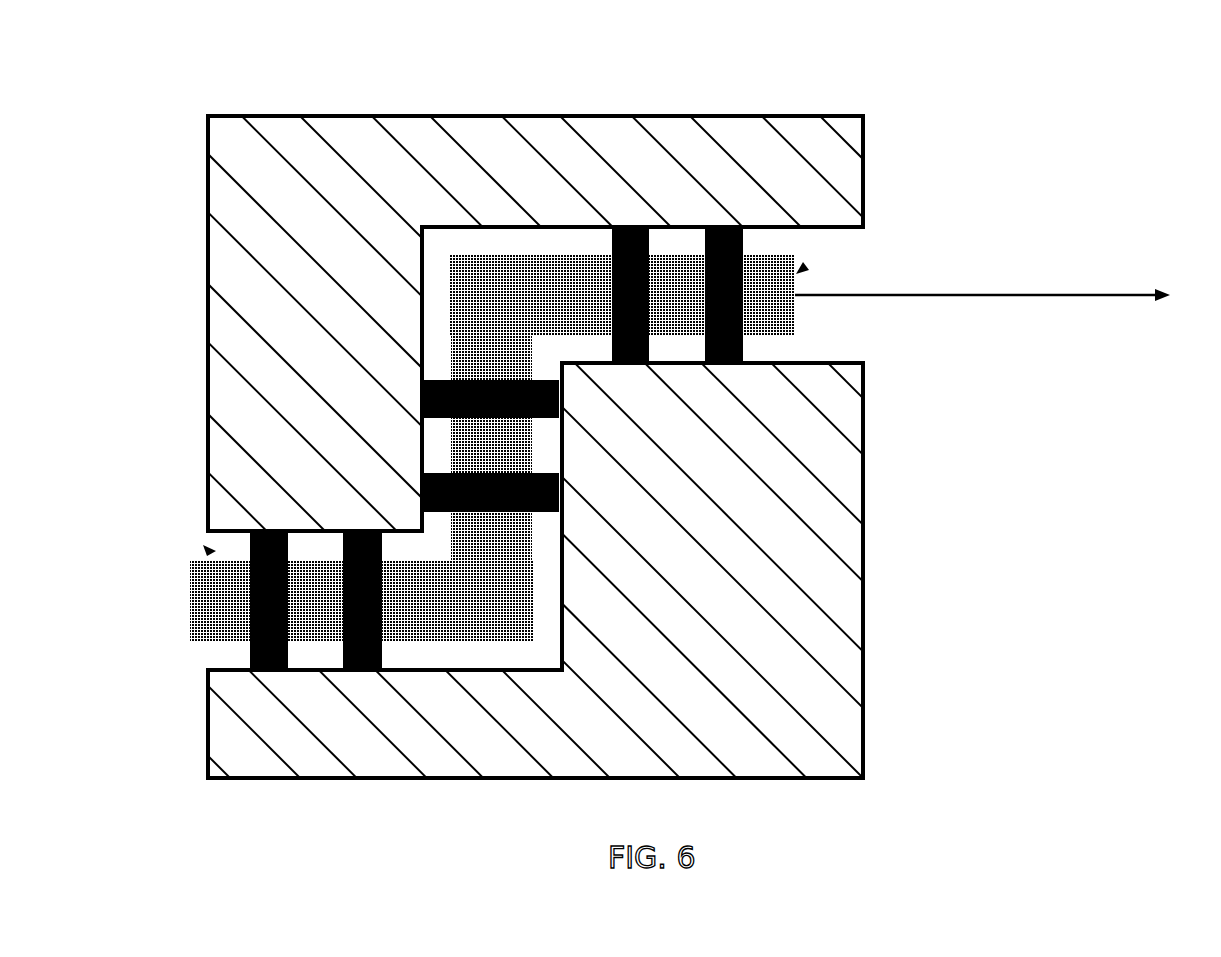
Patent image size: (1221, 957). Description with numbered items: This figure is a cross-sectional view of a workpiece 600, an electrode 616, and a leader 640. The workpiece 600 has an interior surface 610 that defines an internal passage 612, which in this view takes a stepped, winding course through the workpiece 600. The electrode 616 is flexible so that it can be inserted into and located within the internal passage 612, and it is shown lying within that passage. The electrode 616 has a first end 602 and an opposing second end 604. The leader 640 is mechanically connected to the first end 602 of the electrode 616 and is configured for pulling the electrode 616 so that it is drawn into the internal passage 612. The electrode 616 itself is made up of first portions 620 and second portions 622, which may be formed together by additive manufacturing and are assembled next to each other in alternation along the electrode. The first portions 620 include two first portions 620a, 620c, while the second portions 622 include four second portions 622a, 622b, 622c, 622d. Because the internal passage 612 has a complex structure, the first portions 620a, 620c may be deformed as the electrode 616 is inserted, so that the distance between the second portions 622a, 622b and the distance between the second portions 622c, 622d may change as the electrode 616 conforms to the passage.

The workpiece 600 is at (610, 450).
The first end 602 is at (795, 312).
The second end 604 is at (190, 605).
The interior surface 610 is at (302, 530).
The internal passage 612 is at (211, 548).
The electrode 616 is at (803, 268).
The first portions 620 is at (310, 648).
The first portion 620a is at (485, 642).
The first portion 620c is at (550, 335).
The second portions 622 is at (273, 678).
The second portion 622a is at (363, 670).
The second portion 622b is at (562, 495).
The second portion 622c is at (562, 400).
The second portion 622d is at (650, 347).
The leader 640 is at (1027, 290).